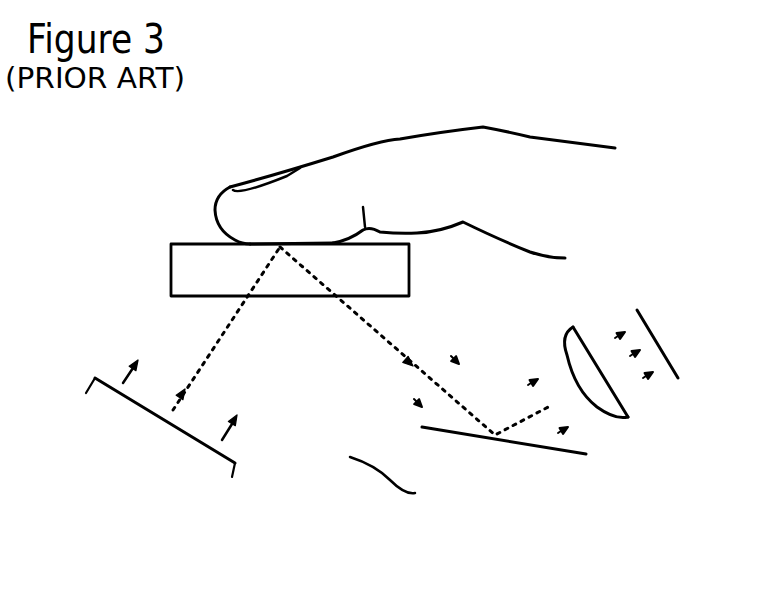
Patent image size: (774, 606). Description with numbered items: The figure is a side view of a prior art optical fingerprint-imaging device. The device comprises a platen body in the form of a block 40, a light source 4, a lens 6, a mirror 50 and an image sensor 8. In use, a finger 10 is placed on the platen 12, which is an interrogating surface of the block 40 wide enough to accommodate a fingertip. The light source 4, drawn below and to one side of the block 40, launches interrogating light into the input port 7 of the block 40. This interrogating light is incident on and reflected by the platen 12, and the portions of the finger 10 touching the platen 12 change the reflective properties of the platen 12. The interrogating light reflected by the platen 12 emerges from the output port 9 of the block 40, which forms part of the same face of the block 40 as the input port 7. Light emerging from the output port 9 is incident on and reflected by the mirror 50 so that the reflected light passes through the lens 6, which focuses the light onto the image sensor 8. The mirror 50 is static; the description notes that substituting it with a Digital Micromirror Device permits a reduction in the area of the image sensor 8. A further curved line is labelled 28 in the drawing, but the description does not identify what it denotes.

The finger 10 is at (395, 143).
The platen 12 is at (190, 243).
The block 40 is at (170, 275).
The light source 4 is at (237, 473).
The input port 7 is at (232, 313).
The output port 9 is at (400, 348).
The mirror 50 is at (512, 443).
The housing curve 28 is at (455, 507).
The lens 6 is at (630, 418).
The image sensor 8 is at (673, 365).